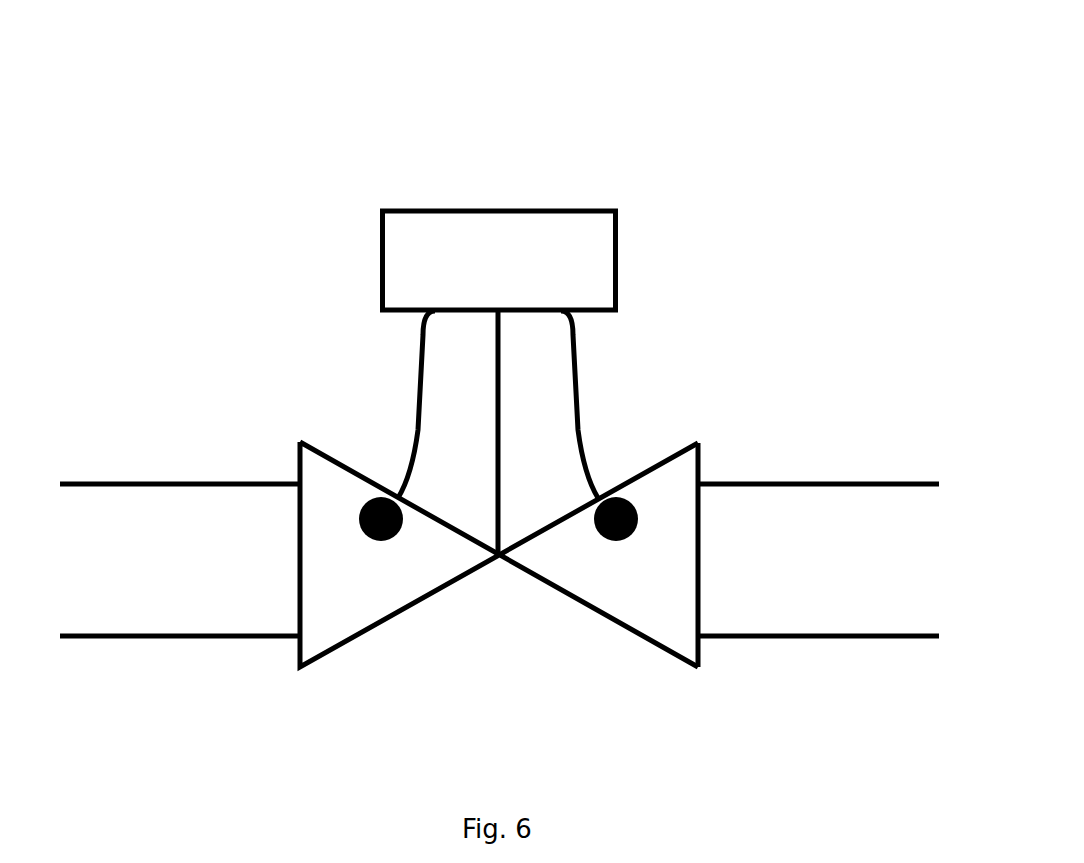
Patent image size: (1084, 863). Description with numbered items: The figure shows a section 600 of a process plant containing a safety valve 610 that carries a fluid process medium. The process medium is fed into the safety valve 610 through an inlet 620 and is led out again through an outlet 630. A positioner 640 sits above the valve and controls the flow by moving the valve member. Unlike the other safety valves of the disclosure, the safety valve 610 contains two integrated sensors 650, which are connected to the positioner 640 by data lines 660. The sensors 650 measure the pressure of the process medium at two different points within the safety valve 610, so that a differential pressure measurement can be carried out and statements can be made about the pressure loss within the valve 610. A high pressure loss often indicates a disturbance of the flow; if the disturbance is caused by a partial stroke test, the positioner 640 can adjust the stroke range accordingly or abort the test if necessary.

The section of a plant 600 is at (385, 108).
The safety valve 610 is at (498, 463).
The inlet 620 is at (235, 582).
The outlet 630 is at (780, 595).
The positioner 640 is at (510, 210).
The integrated sensor 650 is at (372, 500).
The data line 660 is at (418, 350).